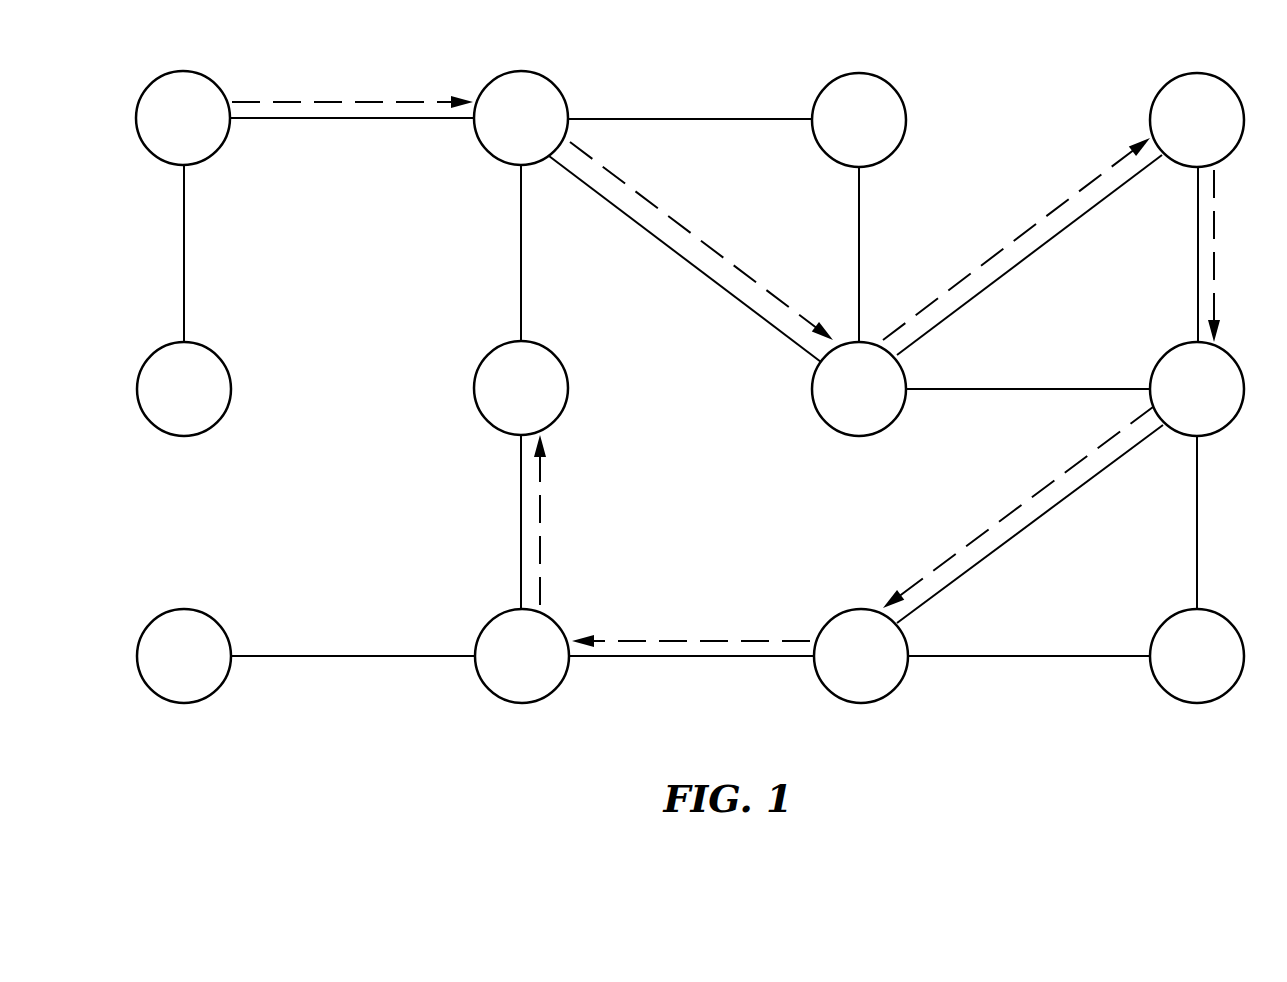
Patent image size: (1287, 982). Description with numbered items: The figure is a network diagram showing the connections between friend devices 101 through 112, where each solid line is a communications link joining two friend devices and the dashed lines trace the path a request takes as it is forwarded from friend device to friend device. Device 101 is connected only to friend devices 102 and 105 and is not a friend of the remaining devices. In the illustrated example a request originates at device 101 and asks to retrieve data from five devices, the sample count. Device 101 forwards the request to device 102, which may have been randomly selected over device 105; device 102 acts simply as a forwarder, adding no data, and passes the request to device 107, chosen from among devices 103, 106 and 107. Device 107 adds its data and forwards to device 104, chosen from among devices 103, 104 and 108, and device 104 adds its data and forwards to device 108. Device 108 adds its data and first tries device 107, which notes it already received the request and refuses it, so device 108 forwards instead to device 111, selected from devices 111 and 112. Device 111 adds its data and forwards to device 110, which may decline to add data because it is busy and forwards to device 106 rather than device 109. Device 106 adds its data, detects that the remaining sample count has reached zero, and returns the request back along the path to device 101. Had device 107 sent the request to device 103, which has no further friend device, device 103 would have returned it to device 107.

The device 101 is at (191, 106).
The device 102 is at (528, 106).
The device 103 is at (866, 107).
The device 104 is at (1207, 108).
The device 105 is at (191, 377).
The device 106 is at (528, 377).
The device 107 is at (876, 389).
The device 108 is at (1206, 377).
The device 109 is at (192, 646).
The device 110 is at (530, 646).
The device 111 is at (880, 656).
The device 112 is at (1208, 646).